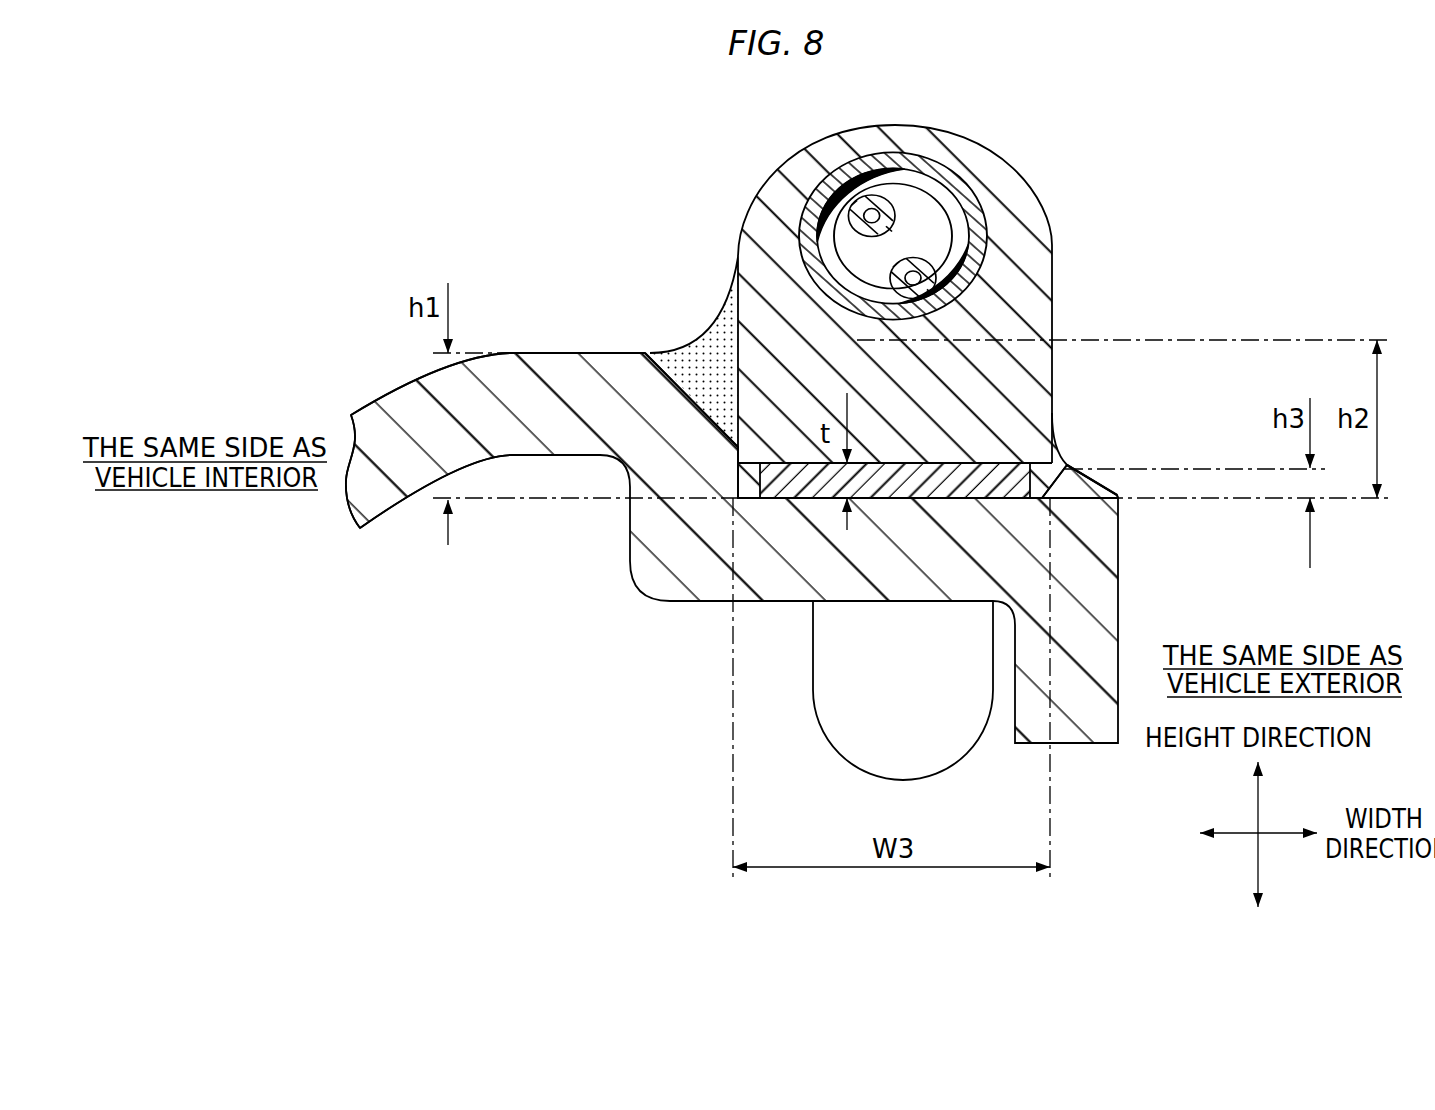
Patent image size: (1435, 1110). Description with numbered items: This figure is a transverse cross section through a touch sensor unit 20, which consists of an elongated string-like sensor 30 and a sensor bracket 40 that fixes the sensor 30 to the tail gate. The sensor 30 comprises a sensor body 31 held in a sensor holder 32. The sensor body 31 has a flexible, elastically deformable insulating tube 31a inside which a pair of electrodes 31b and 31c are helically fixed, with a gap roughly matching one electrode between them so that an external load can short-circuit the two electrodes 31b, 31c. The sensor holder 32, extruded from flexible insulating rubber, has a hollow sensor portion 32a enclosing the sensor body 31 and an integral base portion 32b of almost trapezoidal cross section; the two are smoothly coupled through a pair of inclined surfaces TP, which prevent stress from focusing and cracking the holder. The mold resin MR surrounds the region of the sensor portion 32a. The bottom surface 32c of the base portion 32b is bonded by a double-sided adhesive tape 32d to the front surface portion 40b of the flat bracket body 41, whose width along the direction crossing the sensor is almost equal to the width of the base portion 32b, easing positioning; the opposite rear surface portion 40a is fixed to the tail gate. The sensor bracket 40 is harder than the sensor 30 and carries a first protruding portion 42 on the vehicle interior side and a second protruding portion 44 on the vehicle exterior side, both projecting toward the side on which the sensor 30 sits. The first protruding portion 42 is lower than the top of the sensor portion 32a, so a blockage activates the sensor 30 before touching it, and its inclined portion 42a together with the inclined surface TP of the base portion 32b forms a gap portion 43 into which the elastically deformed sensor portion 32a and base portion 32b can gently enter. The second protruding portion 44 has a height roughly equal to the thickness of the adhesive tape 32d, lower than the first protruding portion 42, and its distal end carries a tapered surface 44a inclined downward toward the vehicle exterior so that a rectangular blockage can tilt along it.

The touch sensor unit 20 is at (587, 200).
The sensor 30 is at (1033, 205).
The sensor body 31 is at (938, 180).
The insulating tube 31a is at (893, 183).
The electrode 31b is at (823, 235).
The electrode 31c is at (985, 247).
The sensor holder 32 is at (813, 188).
The sensor portion 32a is at (847, 172).
The base portion 32b is at (953, 417).
The bottom surface 32c is at (967, 478).
The double-sided adhesive tape 32d is at (790, 470).
The sensor bracket 40 is at (1122, 621).
The rear surface portion 40a is at (679, 603).
The front surface portion 40b is at (395, 388).
The bracket body 41 is at (892, 563).
The first protruding portion 42 is at (577, 385).
The inclined portion 42a is at (713, 353).
The gap portion 43 is at (733, 357).
The second protruding portion 44 is at (1067, 467).
The tapered surface 44a is at (1097, 480).
The mold resin MR is at (997, 182).
The inclined surface TP is at (777, 338).